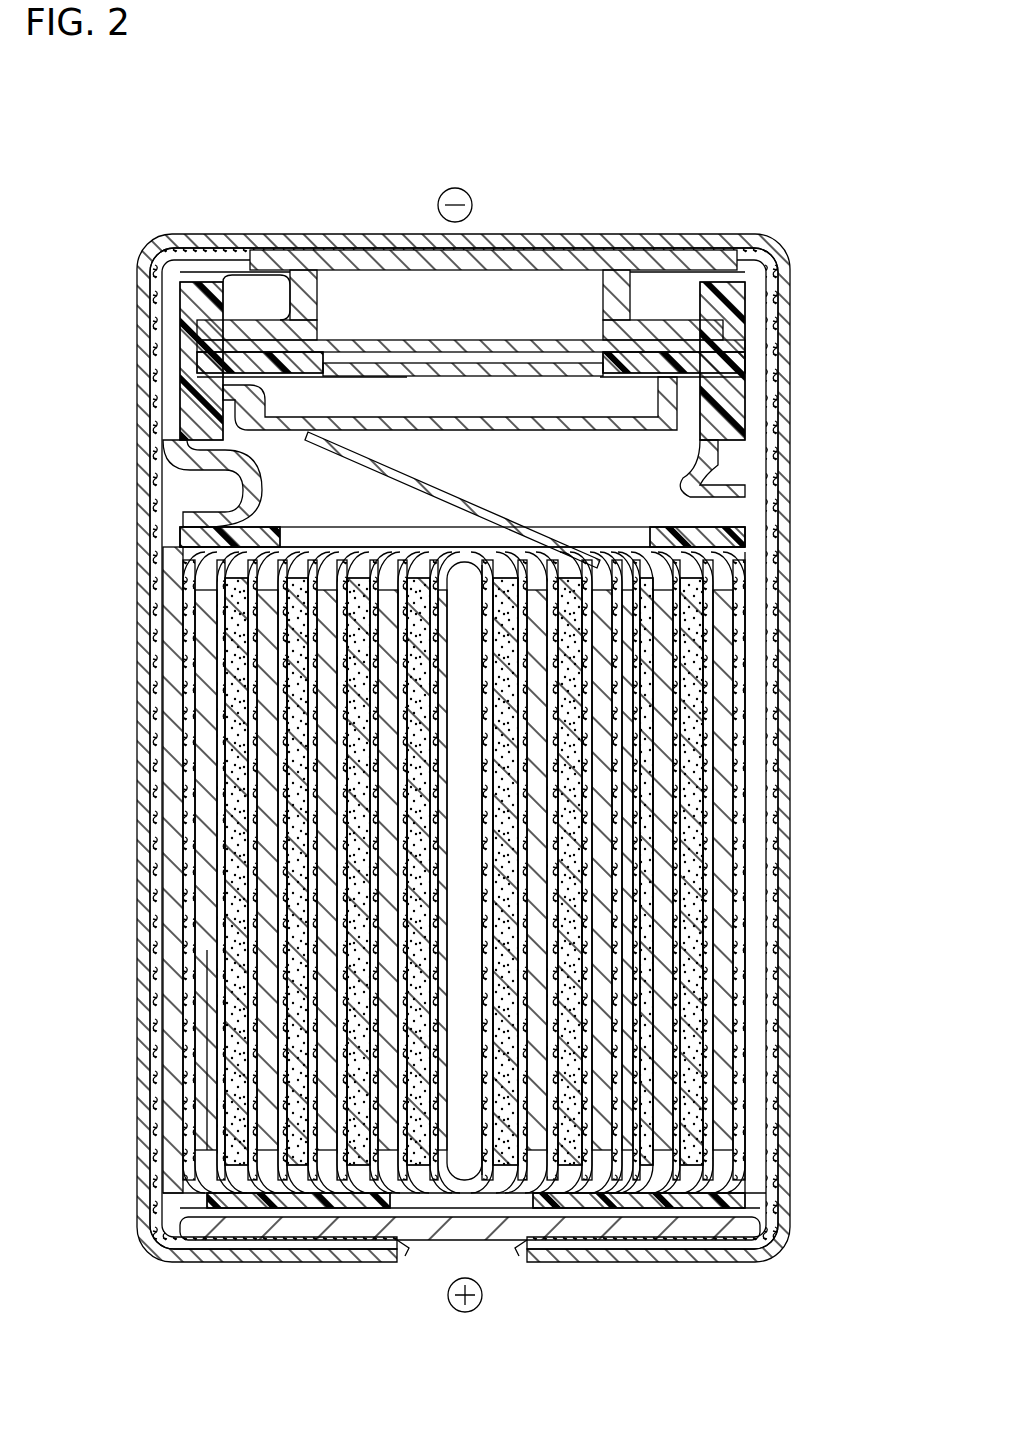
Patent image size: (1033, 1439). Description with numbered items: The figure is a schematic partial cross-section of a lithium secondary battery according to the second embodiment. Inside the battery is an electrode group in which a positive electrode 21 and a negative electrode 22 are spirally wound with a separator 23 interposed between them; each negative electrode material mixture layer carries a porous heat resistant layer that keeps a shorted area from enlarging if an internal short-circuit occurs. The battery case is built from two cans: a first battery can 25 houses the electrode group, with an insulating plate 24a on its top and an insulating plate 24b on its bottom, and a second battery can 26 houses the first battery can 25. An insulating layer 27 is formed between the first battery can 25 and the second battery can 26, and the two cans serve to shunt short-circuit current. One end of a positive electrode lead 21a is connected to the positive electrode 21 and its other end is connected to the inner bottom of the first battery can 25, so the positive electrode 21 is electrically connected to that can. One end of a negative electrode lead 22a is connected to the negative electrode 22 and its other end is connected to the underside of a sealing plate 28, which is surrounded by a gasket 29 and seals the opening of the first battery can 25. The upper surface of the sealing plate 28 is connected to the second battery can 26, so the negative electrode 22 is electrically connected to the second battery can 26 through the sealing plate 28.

The positive electrode 21 is at (722, 912).
The positive electrode lead 21a is at (520, 1225).
The negative electrode 22 is at (690, 973).
The negative electrode lead 22a is at (492, 530).
The separator 23 is at (742, 788).
The insulating plate 24a is at (745, 540).
The insulating plate 24b is at (738, 1200).
The first battery can 25 is at (752, 1093).
The second battery can 26 is at (783, 1032).
The insulating layer 27 is at (770, 1132).
The sealing plate 28 is at (368, 257).
The gasket 29 is at (737, 343).